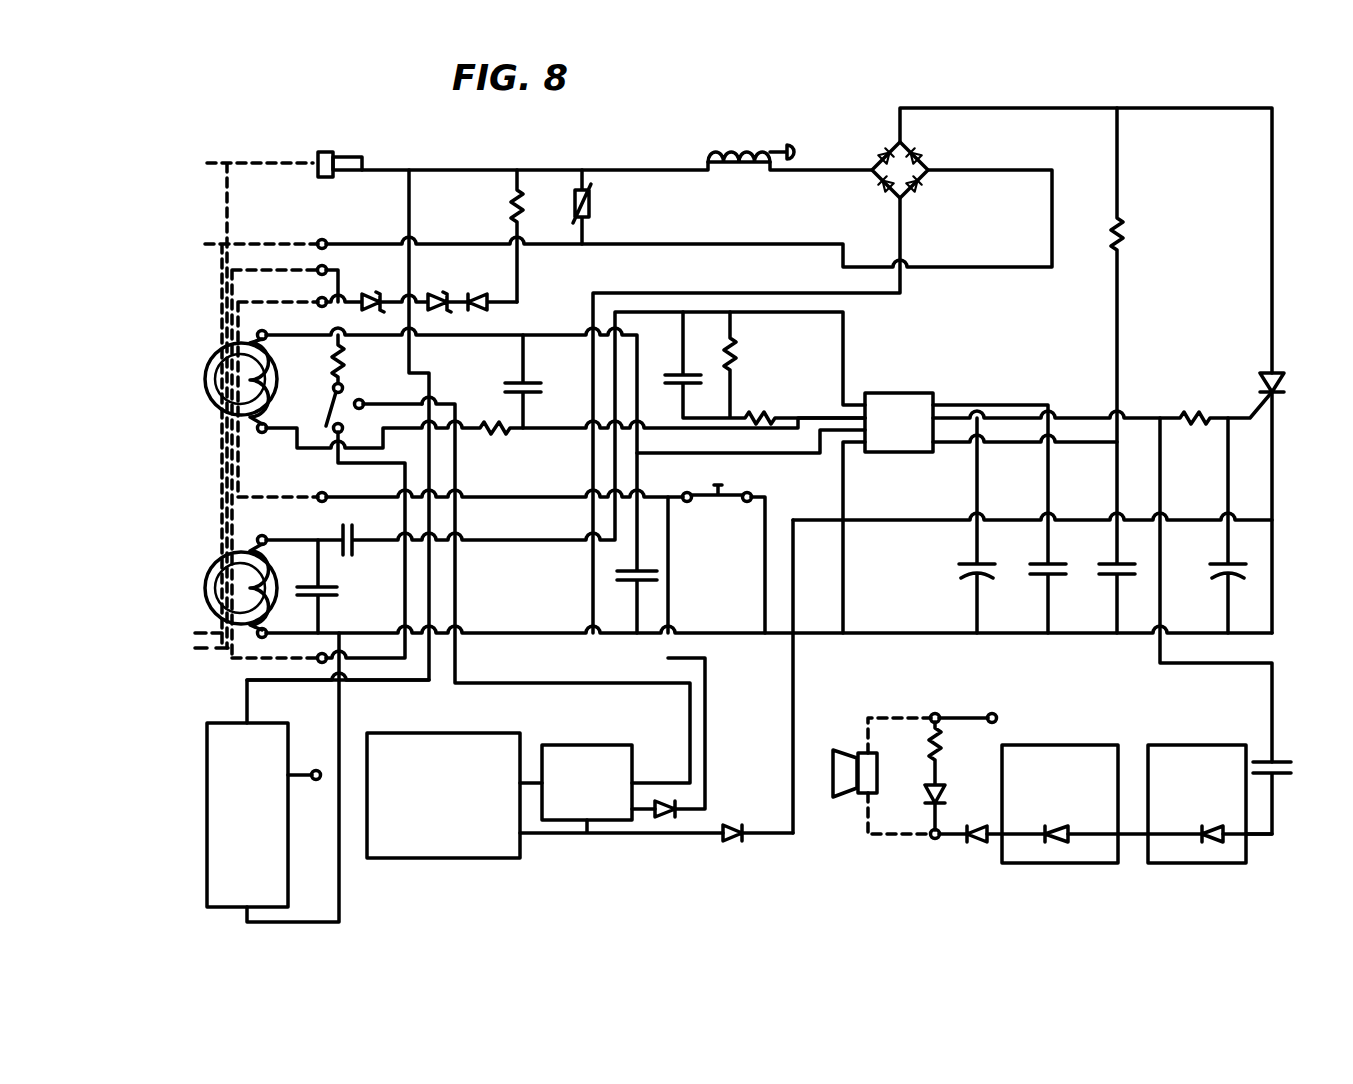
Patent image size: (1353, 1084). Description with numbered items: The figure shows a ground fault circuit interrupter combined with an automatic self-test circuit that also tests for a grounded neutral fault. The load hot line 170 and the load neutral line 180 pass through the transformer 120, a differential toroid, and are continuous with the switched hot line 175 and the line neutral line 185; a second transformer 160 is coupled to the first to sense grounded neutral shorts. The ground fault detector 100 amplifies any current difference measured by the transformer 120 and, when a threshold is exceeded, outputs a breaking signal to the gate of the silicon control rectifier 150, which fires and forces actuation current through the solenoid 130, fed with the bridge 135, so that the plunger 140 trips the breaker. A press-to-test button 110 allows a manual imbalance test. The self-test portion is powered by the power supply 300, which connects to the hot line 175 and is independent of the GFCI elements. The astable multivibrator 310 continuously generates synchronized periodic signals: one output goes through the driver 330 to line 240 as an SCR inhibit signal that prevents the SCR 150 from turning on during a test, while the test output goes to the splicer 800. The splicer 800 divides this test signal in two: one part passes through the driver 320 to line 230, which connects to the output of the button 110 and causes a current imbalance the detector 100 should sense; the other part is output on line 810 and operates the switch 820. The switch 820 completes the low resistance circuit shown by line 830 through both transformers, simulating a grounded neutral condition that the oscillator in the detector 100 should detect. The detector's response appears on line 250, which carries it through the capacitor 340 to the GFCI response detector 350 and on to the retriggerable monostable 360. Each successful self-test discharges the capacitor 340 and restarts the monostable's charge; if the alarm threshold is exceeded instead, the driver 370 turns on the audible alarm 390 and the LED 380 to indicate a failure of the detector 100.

The ground fault detector 100 is at (933, 393).
The press-to-test button 110 is at (735, 495).
The transformer 120 is at (210, 400).
The solenoid 130 is at (708, 152).
The bridge 135 is at (892, 200).
The plunger 140 is at (800, 143).
The silicon control rectifier 150 is at (1258, 388).
The second transformer 160 is at (207, 566).
The load hot line 170 is at (203, 655).
The switched hot line 175 is at (222, 163).
The load neutral line 180 is at (205, 632).
The line neutral line 185 is at (212, 244).
The line 230 is at (672, 565).
The line 240 is at (905, 522).
The line 250 is at (1162, 492).
The power supply 300 is at (263, 828).
The astable multivibrator 310 is at (455, 820).
The driver 320 is at (668, 815).
The driver 330 is at (735, 840).
The capacitor 340 is at (1262, 760).
The GFCI response detector 350 is at (1213, 784).
The retriggerable monostable 360 is at (1076, 784).
The driver 370 is at (975, 845).
The LED 380 is at (940, 783).
The alarm 390 is at (845, 797).
The splicer 800 is at (603, 806).
The line 810 is at (457, 600).
The switch 820 is at (348, 402).
The line 830 is at (405, 620).